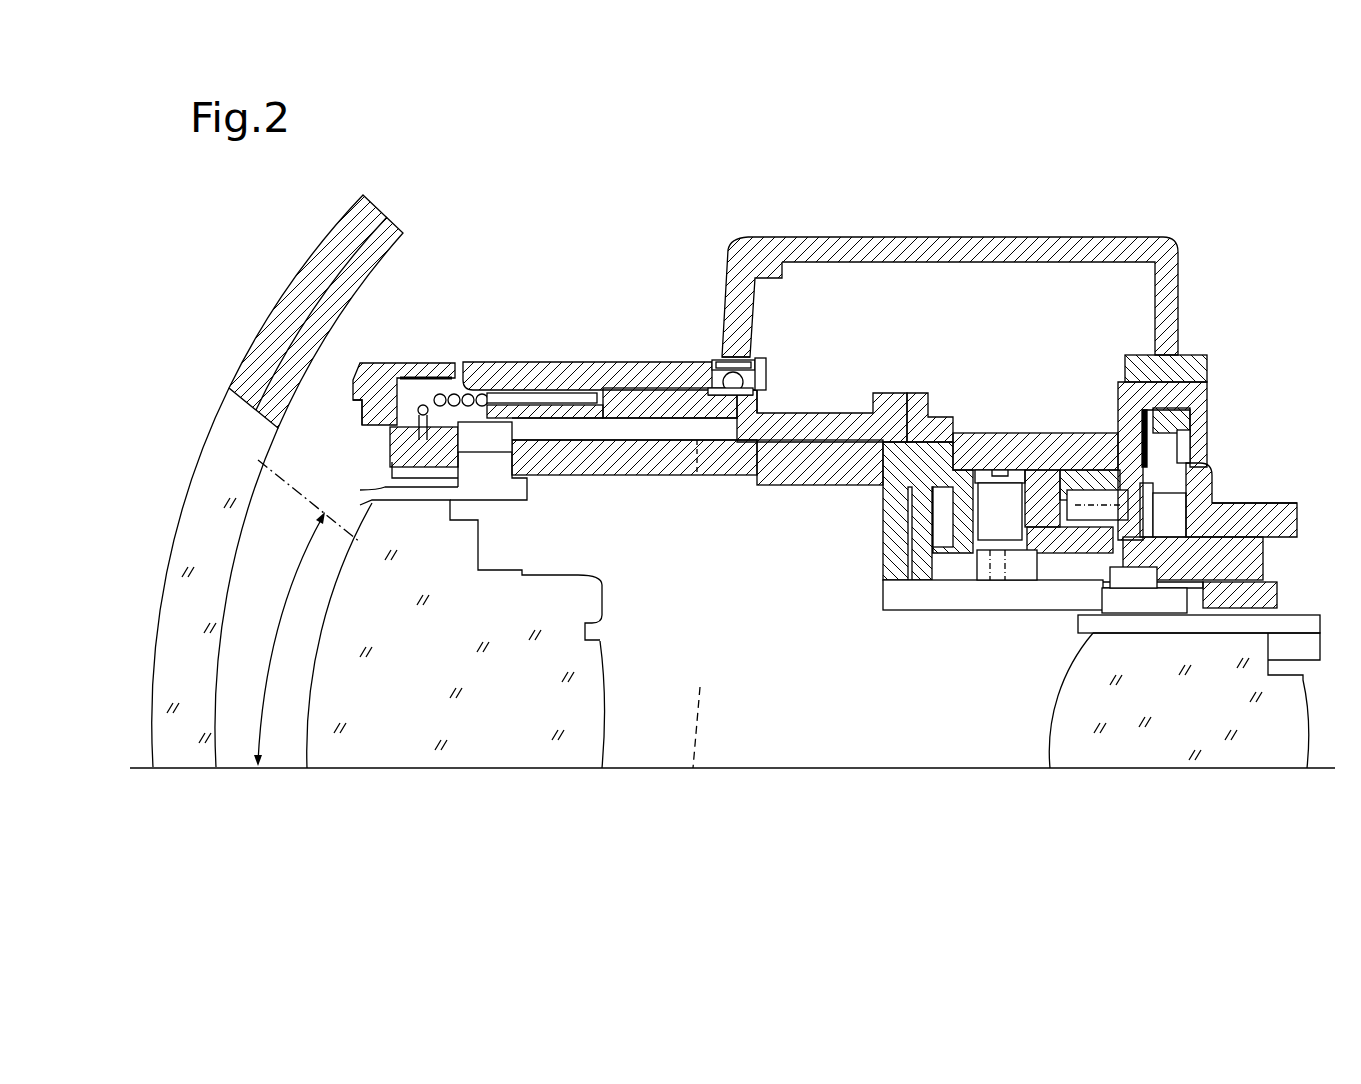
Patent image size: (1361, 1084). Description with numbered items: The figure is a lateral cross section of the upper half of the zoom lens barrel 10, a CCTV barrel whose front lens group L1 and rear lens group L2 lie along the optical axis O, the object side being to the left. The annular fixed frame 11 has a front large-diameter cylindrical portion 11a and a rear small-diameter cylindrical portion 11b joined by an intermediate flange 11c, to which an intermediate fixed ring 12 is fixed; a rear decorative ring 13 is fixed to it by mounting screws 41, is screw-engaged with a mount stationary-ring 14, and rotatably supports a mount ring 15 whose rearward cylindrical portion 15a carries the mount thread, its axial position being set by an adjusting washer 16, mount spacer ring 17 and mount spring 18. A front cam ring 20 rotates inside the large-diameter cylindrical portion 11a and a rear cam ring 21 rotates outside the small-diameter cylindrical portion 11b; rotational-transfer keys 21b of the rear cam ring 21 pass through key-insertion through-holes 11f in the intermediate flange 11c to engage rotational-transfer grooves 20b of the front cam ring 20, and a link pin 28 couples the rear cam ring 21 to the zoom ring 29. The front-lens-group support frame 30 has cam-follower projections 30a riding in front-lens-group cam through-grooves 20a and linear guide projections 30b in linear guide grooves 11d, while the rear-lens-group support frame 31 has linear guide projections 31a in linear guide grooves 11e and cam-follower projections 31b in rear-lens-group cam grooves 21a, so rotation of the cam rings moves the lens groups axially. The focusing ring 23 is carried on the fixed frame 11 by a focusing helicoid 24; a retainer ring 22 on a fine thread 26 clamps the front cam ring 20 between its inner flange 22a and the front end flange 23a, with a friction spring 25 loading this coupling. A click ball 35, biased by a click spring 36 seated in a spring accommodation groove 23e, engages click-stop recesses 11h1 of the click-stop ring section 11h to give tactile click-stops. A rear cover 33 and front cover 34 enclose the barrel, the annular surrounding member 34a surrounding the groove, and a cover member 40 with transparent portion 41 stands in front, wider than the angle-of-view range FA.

The lens barrel 10 is at (518, 264).
The fixed frame 11 is at (893, 617).
The large-diameter cylindrical portion 11a is at (620, 407).
The small-diameter cylindrical portion 11b is at (1272, 588).
The intermediate flange 11c is at (893, 553).
The linear guide grooves 11d is at (592, 428).
The linear guide grooves 11e is at (947, 597).
The key-insertion through-holes 11f is at (893, 480).
The click-stop ring section 11h is at (753, 403).
The click-stop recesses 11h1 is at (710, 362).
The intermediate fixed ring 12 is at (937, 427).
The rear decorative ring 13 is at (1133, 400).
The mount stationary-ring 14 is at (1197, 357).
The mount ring 15 is at (1205, 497).
The cylindrical portion 15a is at (1242, 522).
The adjusting washer 16 is at (1138, 427).
The mount spacer ring 17 is at (1183, 417).
The mount spring 18 is at (1180, 440).
The front cam ring 20 is at (643, 462).
The front-lens-group cam through-grooves 20a is at (503, 455).
The rotational-transfer grooves 20b is at (699, 478).
The rear cam ring 21 is at (1035, 570).
The rear-lens-group cam grooves 21a is at (1133, 580).
The rotational-transfer keys 21b is at (797, 470).
The retainer ring 22 is at (378, 370).
The inner flange 22a is at (363, 410).
The focusing ring 23 is at (527, 362).
The front end flange 23a is at (460, 430).
The spring accommodation groove 23e is at (753, 358).
The focusing helicoid 24 is at (541, 398).
The friction spring 25 is at (467, 393).
The fine thread 26 is at (428, 377).
The link pin 28 is at (987, 493).
The zoom ring 29 is at (1003, 445).
The front-lens-group support frame 30 is at (573, 582).
The cam-follower projections 30a is at (392, 480).
The linear guide projections 30b is at (470, 463).
The rear-lens-group support frame 31 is at (1237, 622).
The linear guide projections 31a is at (1165, 610).
The cam-follower projections 31b is at (1140, 590).
The rear cover 33 is at (1002, 247).
The front cover 34 is at (735, 263).
The annular surrounding member 34a is at (722, 376).
The click ball 35 is at (744, 381).
The click spring 36 is at (717, 367).
The cover member 40 is at (312, 232).
The transparent portion 41 is at (218, 415).
The angle-of-view range FA is at (301, 613).
The front lens group L1 is at (585, 697).
The rear lens group L2 is at (1058, 745).
The optical axis O is at (704, 713).